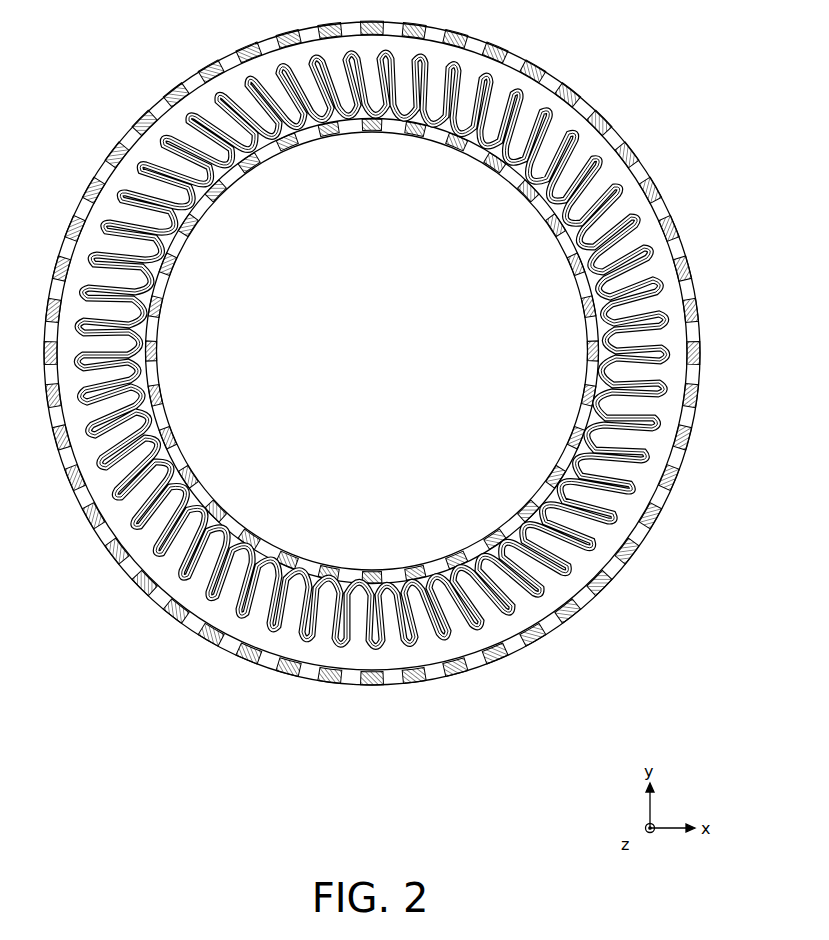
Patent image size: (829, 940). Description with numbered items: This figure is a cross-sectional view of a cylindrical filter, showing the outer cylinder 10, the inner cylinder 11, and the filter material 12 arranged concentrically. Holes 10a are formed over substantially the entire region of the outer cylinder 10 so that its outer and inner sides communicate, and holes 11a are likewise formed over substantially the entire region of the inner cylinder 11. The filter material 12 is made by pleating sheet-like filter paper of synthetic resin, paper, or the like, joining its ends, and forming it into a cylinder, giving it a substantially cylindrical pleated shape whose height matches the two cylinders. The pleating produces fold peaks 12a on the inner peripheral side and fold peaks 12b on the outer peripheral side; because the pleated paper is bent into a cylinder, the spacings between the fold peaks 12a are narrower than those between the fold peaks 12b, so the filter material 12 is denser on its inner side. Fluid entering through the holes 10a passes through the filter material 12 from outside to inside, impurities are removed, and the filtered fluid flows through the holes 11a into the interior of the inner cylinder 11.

The outer cylinder 10 is at (595, 112).
The holes 10a is at (615, 135).
The inner cylinder 11 is at (500, 170).
The holes 11a is at (533, 203).
The filter material 12 is at (575, 543).
The fold peaks 12a is at (602, 320).
The fold peaks 12b is at (657, 427).